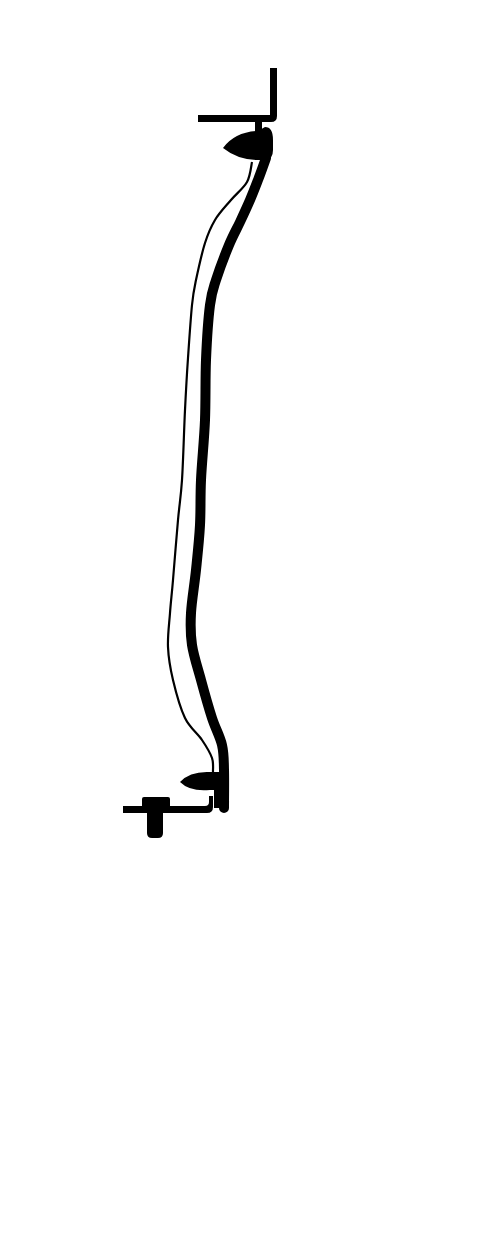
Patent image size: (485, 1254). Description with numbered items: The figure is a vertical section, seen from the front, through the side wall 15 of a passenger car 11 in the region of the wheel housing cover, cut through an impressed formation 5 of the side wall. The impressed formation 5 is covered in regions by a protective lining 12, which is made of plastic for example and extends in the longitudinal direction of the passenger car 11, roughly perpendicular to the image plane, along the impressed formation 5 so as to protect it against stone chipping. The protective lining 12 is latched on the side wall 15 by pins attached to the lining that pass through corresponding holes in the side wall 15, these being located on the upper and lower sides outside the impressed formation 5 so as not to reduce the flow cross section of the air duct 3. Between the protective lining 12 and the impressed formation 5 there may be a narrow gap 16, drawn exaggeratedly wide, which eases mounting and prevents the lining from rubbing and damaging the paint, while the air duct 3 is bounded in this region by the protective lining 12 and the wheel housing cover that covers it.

The passenger car 11 is at (117, 145).
The side wall 15 is at (268, 85).
The impressed formation 5 is at (188, 358).
The air duct 3 is at (233, 527).
The protective lining 12 is at (193, 617).
The gap 16 is at (217, 243).